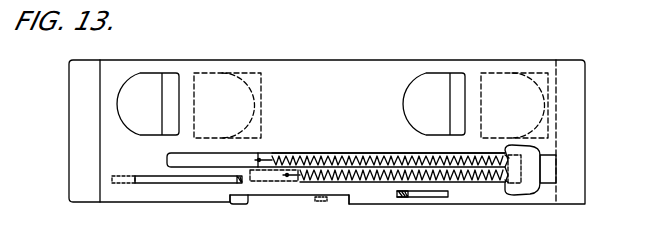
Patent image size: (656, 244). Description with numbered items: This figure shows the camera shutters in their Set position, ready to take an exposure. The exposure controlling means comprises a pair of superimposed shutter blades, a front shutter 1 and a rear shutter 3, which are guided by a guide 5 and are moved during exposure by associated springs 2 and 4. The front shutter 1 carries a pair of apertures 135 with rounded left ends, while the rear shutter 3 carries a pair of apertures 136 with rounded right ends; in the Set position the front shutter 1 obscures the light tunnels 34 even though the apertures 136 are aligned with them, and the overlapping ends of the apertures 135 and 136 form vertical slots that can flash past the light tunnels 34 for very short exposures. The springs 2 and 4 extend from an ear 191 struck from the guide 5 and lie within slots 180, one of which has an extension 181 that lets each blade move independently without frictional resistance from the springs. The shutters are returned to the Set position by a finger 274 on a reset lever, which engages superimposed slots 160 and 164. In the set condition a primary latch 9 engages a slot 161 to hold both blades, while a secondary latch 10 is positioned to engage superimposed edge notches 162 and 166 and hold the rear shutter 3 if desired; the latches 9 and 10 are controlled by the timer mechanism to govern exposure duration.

The rear shutter blade 3 is at (69, 124).
The front shutter blade 1 is at (100, 141).
The apertures 135 is at (148, 73).
The light tunnels 34 is at (259, 73).
The apertures 136 is at (262, 93).
The slot extension 181 is at (183, 154).
The slots 180 is at (320, 157).
The spring 4 is at (357, 157).
The spring 2 is at (362, 182).
The guide 5 is at (537, 168).
The ear 191 is at (505, 183).
The slot 160 is at (165, 182).
The finger 274 is at (238, 183).
The slot 164 is at (118, 174).
The edge notch 162 is at (245, 205).
The secondary latch 10 is at (321, 202).
The edge notch 166 is at (343, 200).
The slot 161 is at (437, 198).
The primary latch 9 is at (402, 198).